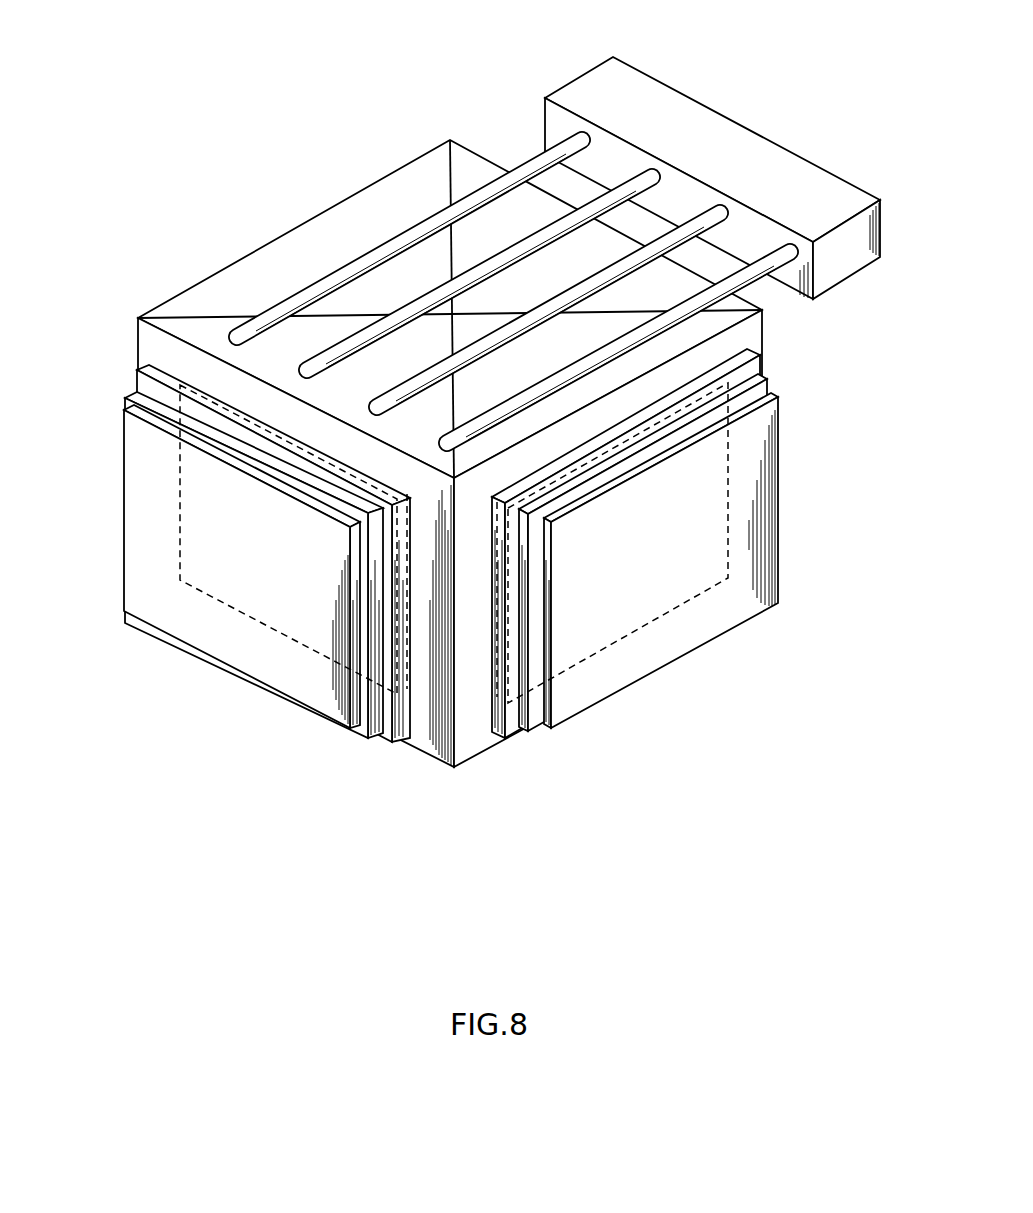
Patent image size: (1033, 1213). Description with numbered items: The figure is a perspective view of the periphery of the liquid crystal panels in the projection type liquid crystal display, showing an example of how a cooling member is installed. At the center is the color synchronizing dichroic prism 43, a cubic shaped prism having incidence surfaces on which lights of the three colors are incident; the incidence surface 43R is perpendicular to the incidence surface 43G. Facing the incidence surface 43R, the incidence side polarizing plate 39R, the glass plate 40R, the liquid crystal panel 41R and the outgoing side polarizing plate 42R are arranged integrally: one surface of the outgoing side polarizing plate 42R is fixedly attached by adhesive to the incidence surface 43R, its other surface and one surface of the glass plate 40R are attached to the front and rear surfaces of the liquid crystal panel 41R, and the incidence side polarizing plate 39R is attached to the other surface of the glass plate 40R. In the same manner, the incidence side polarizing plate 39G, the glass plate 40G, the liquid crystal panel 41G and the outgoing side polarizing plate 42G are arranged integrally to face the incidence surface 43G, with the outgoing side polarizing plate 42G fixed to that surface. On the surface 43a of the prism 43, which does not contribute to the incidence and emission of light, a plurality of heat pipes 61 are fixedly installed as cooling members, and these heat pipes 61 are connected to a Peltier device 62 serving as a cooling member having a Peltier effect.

The color synchronizing dichroic prism 43 is at (450, 508).
The surface of the color synchronizing dichroic prism 43a is at (200, 293).
The incidence surface 43G is at (437, 738).
The incidence surface 43R is at (473, 733).
The heat pipes 61 is at (585, 368).
The Peltier device 62 is at (757, 127).
The incidence side polarizing plate 39G is at (138, 470).
The glass plate 40G is at (127, 398).
The liquid crystal panel 41G is at (137, 370).
The outgoing side polarizing plate 42G is at (185, 395).
The incidence side polarizing plate 39R is at (770, 572).
The glass plate 40R is at (755, 386).
The liquid crystal panel 41R is at (762, 352).
The outgoing side polarizing plate 42R is at (707, 372).